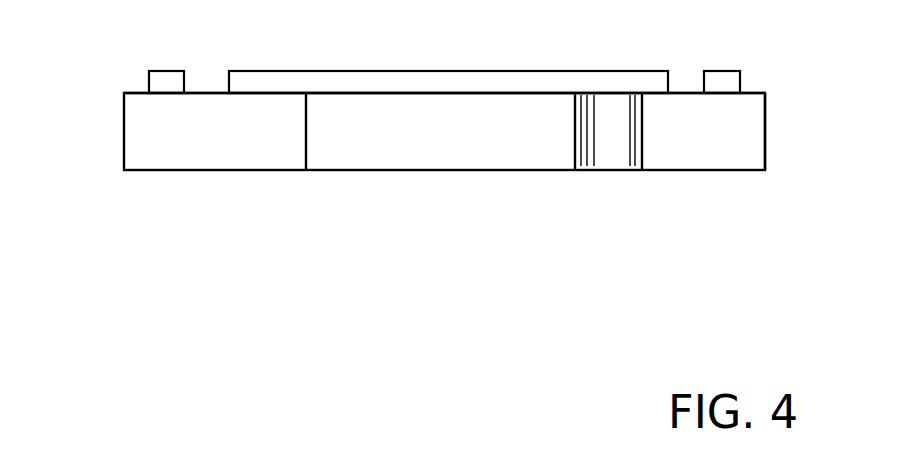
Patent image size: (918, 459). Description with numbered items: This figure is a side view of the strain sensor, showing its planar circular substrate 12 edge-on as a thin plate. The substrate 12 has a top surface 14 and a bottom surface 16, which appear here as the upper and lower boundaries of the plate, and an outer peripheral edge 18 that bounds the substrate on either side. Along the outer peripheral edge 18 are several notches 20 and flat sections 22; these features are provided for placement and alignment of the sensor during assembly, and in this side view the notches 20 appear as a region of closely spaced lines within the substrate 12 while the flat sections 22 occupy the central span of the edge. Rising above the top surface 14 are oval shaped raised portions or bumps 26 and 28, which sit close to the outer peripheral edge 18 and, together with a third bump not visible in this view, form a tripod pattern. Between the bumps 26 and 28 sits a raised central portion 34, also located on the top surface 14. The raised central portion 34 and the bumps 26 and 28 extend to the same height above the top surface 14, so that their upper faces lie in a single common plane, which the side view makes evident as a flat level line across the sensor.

The substrate 12 is at (124, 120).
The top surface 14 is at (137, 92).
The bottom surface 16 is at (155, 170).
The outer peripheral edge 18 is at (766, 140).
The notches 20 is at (600, 162).
The flat sections 22 is at (405, 142).
The bump 26 is at (163, 71).
The bump 28 is at (723, 71).
The raised central portion 34 is at (388, 70).